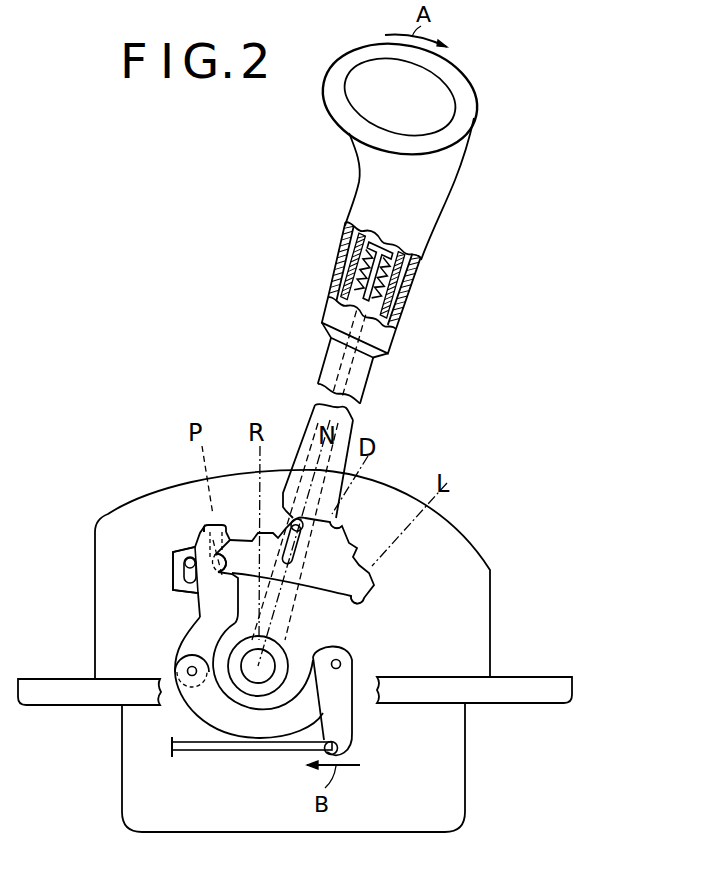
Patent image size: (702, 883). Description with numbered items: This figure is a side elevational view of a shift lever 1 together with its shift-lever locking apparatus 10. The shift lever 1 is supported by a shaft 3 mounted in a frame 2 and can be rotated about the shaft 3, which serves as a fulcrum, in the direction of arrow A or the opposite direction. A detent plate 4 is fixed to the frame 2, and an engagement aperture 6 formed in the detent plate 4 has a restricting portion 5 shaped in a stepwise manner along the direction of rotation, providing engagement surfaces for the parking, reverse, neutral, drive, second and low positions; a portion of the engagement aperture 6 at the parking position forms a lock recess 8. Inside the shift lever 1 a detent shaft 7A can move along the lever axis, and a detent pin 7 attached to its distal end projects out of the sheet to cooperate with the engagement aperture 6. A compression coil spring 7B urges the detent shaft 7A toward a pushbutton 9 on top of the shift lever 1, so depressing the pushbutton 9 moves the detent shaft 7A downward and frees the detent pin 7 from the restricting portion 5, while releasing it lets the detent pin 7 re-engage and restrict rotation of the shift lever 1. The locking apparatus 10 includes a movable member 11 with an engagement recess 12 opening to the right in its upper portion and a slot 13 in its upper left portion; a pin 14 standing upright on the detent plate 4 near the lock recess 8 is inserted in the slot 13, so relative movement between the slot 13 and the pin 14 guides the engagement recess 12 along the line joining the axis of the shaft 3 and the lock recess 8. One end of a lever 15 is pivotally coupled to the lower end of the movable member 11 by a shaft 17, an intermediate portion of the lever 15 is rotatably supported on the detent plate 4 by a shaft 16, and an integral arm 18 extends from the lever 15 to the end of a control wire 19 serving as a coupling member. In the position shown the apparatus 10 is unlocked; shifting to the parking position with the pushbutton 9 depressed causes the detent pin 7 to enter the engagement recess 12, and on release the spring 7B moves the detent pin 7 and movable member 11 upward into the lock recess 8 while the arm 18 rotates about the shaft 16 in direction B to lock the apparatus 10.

The shift lever 1 is at (377, 335).
The frame 2 is at (354, 538).
The shaft 3 is at (268, 670).
The detent plate 4 is at (491, 556).
The restricting portion 5 is at (338, 530).
The engagement aperture 6 is at (361, 600).
The detent pin 7 is at (284, 494).
The detent shaft 7A is at (400, 244).
The compression coil spring 7B is at (390, 288).
The lock recess 8 is at (205, 530).
The pushbutton 9 is at (447, 96).
The shift-lever locking apparatus 10 is at (128, 636).
The movable member 11 is at (197, 617).
The engagement recess 12 is at (228, 574).
The slot 13 is at (187, 578).
The pin 14 is at (192, 542).
The lever 15 is at (183, 705).
The shaft 16 is at (343, 657).
The shaft 17 is at (186, 668).
The arm 18 is at (352, 728).
The control wire 19 is at (240, 752).